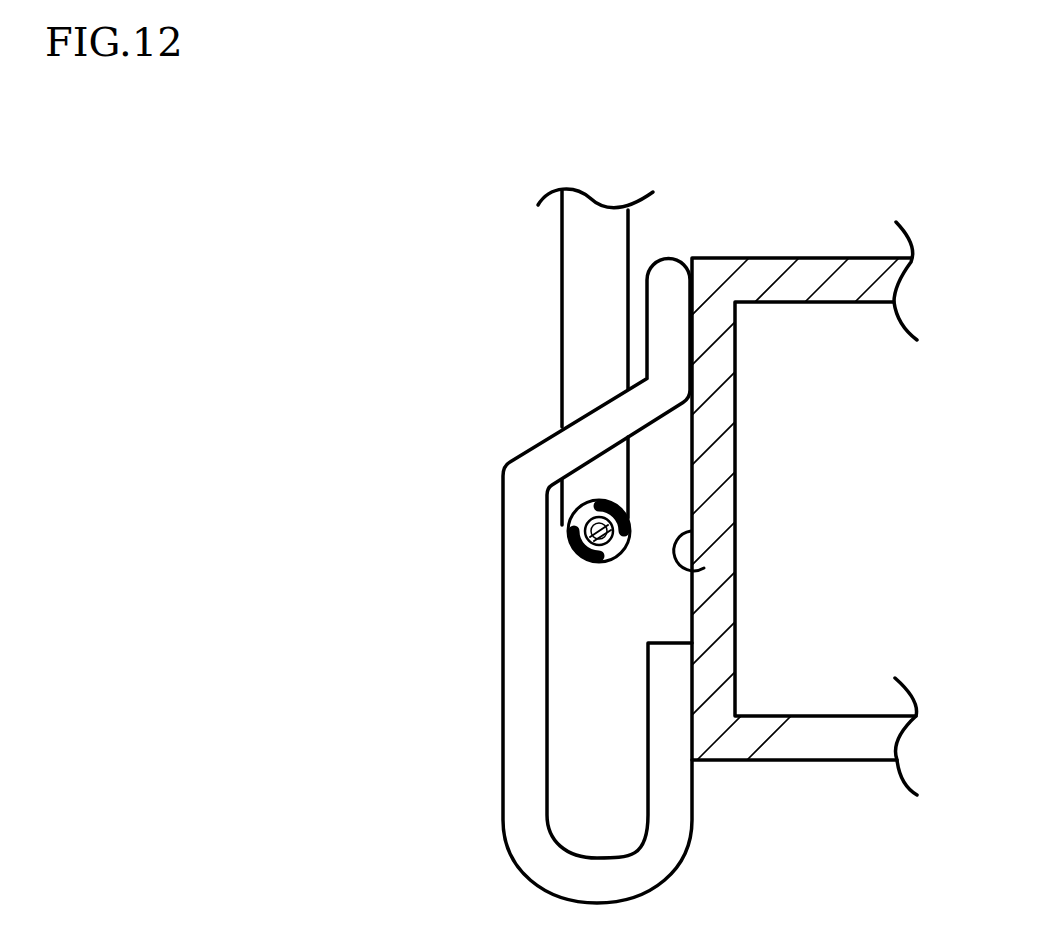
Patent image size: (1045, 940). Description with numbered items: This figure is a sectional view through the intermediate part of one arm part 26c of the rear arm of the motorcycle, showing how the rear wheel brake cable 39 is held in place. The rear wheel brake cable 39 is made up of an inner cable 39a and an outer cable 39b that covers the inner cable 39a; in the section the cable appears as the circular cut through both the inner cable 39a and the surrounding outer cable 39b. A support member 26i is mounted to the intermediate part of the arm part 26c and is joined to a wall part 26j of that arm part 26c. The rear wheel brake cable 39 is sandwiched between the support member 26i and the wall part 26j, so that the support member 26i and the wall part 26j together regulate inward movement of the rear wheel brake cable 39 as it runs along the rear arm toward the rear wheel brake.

The arm part 26c is at (758, 277).
The support member 26i is at (522, 557).
The wall part 26j is at (704, 568).
The rear wheel brake cable 39 is at (312, 291).
The inner cable 39a is at (566, 524).
The outer cable 39b is at (592, 502).